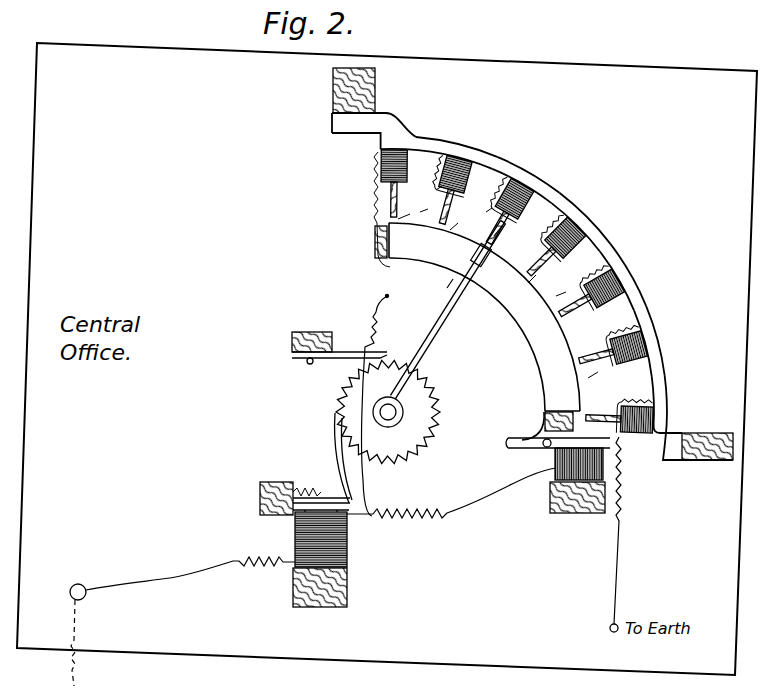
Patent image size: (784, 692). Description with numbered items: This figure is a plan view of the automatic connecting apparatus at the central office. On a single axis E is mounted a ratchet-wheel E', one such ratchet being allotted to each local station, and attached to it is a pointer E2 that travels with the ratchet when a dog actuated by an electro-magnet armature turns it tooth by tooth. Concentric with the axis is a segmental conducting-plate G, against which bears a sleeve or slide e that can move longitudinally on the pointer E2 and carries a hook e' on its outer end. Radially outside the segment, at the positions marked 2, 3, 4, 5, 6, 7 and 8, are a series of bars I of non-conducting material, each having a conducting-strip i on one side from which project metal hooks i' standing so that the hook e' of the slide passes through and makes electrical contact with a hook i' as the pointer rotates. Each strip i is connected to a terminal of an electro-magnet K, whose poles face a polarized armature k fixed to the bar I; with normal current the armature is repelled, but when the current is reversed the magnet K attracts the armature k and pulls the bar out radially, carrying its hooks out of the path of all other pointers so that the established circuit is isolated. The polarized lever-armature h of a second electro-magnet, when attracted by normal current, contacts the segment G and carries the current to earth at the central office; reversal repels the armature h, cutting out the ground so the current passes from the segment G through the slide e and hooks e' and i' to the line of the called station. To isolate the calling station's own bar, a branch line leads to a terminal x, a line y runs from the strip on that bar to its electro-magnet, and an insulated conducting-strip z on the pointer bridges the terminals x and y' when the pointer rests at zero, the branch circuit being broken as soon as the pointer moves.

The contact position 2 of segmental bar 2 is at (374, 108).
The contact position 3 is at (439, 143).
The contact position 4 is at (525, 179).
The contact position 5 is at (581, 222).
The contact position 6 is at (624, 277).
The contact position 7 is at (653, 341).
The contact position 8 is at (692, 417).
The segmental conducting-plate G is at (477, 331).
The electro-magnet K is at (517, 291).
The bar I is at (506, 302).
The conducting-strip i is at (498, 294).
The hook i' is at (492, 259).
The polarized armature k is at (462, 207).
The line y is at (532, 294).
The terminal y' is at (388, 215).
The axis E is at (388, 412).
The ratchet-wheel E' is at (388, 411).
The pointer E2 is at (448, 309).
The sleeve or slide e is at (483, 258).
The hook e' is at (505, 244).
The insulated conducting-strip z is at (446, 288).
The terminal x is at (380, 404).
The polarized lever-armature h is at (558, 473).